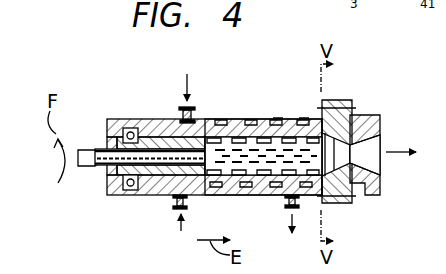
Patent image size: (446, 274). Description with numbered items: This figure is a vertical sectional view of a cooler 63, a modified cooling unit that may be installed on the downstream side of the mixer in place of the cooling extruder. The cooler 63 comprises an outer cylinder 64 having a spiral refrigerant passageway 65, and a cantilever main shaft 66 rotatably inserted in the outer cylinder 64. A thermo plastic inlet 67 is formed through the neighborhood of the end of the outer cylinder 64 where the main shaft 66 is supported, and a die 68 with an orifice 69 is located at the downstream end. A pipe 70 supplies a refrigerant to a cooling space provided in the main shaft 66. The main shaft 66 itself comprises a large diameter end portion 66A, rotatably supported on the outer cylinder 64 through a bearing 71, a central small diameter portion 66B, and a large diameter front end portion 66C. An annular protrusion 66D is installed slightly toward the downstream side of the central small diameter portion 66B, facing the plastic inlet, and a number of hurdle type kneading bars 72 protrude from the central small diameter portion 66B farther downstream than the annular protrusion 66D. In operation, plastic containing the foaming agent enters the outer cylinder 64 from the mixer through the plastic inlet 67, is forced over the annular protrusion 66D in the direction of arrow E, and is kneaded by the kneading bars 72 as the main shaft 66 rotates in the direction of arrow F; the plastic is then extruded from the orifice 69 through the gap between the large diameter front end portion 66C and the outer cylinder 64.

The cooler 63 is at (243, 96).
The outer cylinder 64 is at (156, 124).
The spiral refrigerant passageway 65 is at (303, 118).
The main shaft 66 is at (236, 125).
The large diameter end portion 66A is at (143, 178).
The central small diameter portion 66B is at (262, 190).
The large diameter front end portion 66C is at (358, 130).
The annular protrusion 66D is at (196, 188).
The thermo plastic inlet 67 is at (172, 203).
The die 68 is at (380, 186).
The orifice 69 is at (380, 158).
The pipe 70 is at (85, 168).
The bearing 71 is at (112, 194).
The hurdle type kneading bars 72 is at (262, 120).